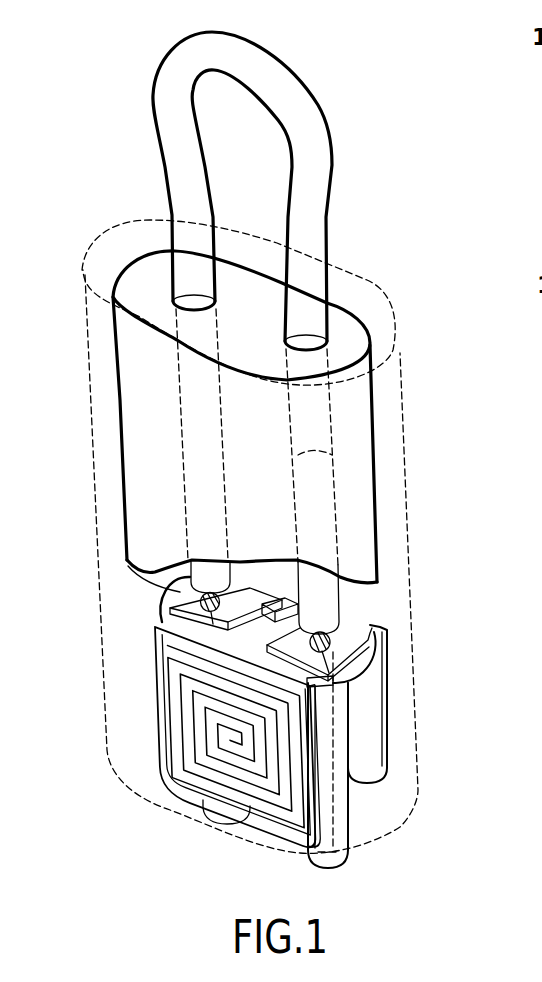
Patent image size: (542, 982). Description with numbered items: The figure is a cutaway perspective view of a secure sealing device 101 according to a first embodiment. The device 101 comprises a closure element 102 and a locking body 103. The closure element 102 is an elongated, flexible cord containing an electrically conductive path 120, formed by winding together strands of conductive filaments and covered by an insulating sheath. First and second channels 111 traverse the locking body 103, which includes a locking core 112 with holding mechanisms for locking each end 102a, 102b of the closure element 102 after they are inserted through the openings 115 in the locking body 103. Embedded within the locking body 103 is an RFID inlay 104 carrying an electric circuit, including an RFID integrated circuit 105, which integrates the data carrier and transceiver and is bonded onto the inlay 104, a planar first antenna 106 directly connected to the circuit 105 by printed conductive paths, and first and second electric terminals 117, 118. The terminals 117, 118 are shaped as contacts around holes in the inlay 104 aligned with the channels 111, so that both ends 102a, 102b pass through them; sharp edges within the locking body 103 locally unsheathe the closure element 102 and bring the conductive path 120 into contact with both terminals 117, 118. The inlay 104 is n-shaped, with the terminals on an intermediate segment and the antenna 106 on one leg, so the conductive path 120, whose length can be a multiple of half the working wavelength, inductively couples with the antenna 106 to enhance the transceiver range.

The secure sealing device 101 is at (350, 111).
The closure element 102 is at (322, 176).
The end of the closure element 102a is at (347, 863).
The end of the closure element 102b is at (195, 811).
The locking body 103 is at (400, 400).
The RFID inlay 104 is at (160, 735).
The RFID integrated circuit 105 is at (272, 606).
The first antenna 106 is at (263, 806).
The channels 111 is at (330, 453).
The locking core 112 is at (373, 513).
The openings 115 is at (382, 275).
The first electric terminal 117 is at (368, 641).
The second electric terminal 118 is at (170, 606).
The electrically conductive path 120 is at (196, 596).